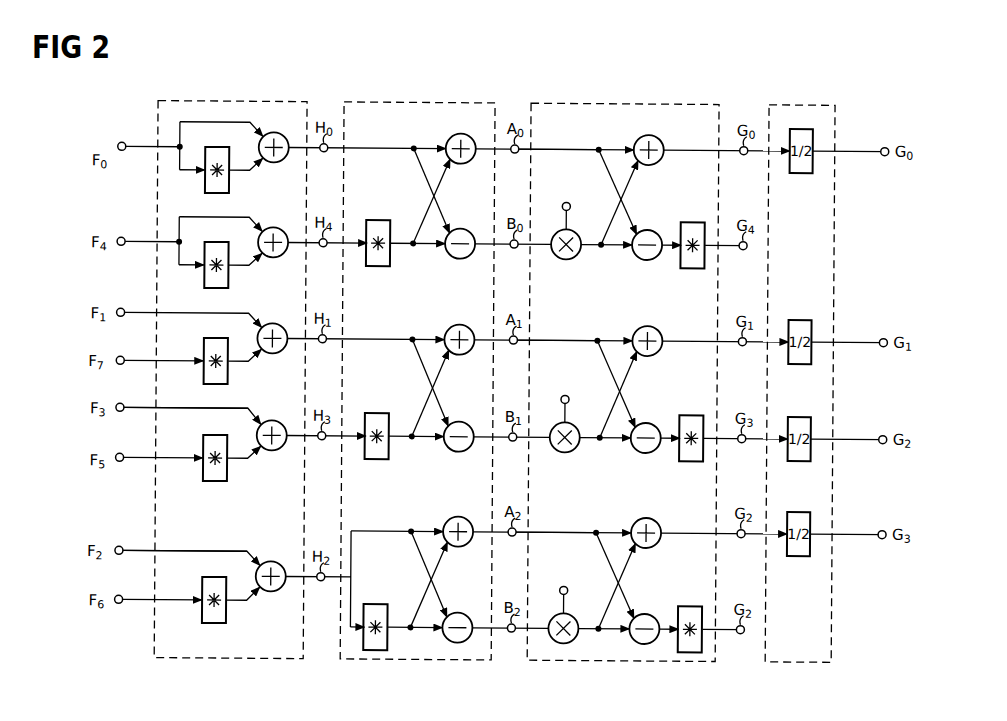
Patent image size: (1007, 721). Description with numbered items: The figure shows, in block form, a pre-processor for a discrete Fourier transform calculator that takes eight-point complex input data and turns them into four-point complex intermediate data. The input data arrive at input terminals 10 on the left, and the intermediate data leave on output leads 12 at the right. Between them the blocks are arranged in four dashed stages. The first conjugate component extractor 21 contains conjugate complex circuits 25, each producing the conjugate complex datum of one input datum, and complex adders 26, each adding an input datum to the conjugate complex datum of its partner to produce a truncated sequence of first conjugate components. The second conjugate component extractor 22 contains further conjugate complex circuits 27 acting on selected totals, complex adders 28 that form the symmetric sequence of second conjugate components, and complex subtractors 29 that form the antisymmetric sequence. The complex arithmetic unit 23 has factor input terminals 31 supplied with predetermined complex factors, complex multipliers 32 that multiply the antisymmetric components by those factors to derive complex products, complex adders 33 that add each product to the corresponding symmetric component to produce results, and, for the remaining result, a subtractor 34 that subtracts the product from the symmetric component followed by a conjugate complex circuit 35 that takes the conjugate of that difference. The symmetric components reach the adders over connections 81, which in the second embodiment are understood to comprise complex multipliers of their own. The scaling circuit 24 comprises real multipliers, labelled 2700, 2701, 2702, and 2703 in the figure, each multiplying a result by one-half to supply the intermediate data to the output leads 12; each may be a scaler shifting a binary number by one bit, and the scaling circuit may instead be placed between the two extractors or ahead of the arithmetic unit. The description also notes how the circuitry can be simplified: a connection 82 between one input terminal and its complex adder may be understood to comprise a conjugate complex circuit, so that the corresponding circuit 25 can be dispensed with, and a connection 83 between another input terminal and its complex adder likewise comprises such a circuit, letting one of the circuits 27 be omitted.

The input terminals 10 is at (134, 360).
The output leads 12 is at (876, 360).
The first conjugate component extractor 21 is at (272, 103).
The second conjugate component extractor 22 is at (462, 103).
The complex arithmetic unit 23 is at (680, 103).
The scaling circuit 24 is at (797, 104).
The conjugate complex circuit 25 is at (196, 396).
The complex adder 26 is at (278, 378).
The conjugate complex circuit 27 is at (384, 421).
The complex adder 28 is at (447, 330).
The complex subtractor 29 is at (463, 424).
The factor input terminals 31 is at (579, 391).
The complex multipliers 32 is at (572, 436).
The complex adder 33 is at (663, 336).
The subtractor 34 is at (626, 444).
The conjugate complex circuit 35 is at (696, 426).
The connections 81 is at (557, 328).
The connection 82 is at (199, 540).
The connection 83 is at (189, 414).
The halving circuit 2700 is at (790, 172).
The halving circuit 2701 is at (799, 318).
The halving circuit 2702 is at (799, 415).
The halving circuit 2703 is at (799, 510).